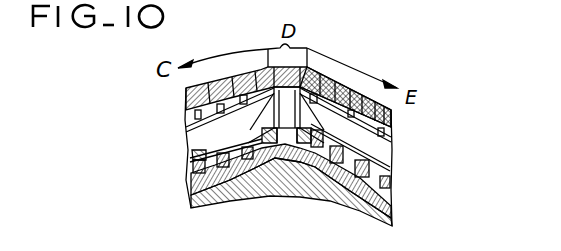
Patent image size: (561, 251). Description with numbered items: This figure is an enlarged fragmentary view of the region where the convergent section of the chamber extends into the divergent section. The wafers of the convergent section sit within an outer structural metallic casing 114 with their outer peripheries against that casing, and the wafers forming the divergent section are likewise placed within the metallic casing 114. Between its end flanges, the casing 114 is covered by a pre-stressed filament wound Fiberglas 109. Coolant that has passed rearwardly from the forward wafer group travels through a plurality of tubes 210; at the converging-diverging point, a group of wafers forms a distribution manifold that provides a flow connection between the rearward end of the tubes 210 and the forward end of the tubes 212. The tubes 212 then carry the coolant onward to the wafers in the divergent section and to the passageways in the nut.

The pre-stressed filament wound Fiberglas 109 is at (221, 197).
The outer structural metallic casing 114 is at (373, 203).
The tubes 210 is at (187, 153).
The tubes 212 is at (391, 160).